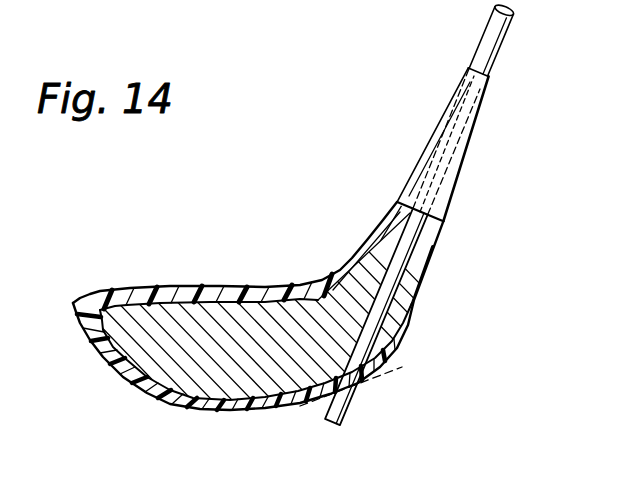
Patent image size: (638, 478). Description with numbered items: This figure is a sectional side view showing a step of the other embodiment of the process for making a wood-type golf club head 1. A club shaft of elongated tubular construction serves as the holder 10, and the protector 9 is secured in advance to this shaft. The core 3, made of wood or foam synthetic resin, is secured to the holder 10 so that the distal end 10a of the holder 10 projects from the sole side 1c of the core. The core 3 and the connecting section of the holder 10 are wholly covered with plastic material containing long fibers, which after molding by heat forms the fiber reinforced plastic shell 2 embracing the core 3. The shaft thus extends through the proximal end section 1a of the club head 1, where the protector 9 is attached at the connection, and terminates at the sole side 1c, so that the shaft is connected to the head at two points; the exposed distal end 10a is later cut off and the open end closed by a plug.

The club head 1 is at (245, 272).
The proximal end section 1a is at (388, 232).
The sole side 1c is at (246, 395).
The fiber reinforced plastic shell 2 is at (141, 290).
The core 3 is at (170, 390).
The protector 9 is at (468, 142).
The holder 10 is at (495, 39).
The distal end 10a is at (345, 406).